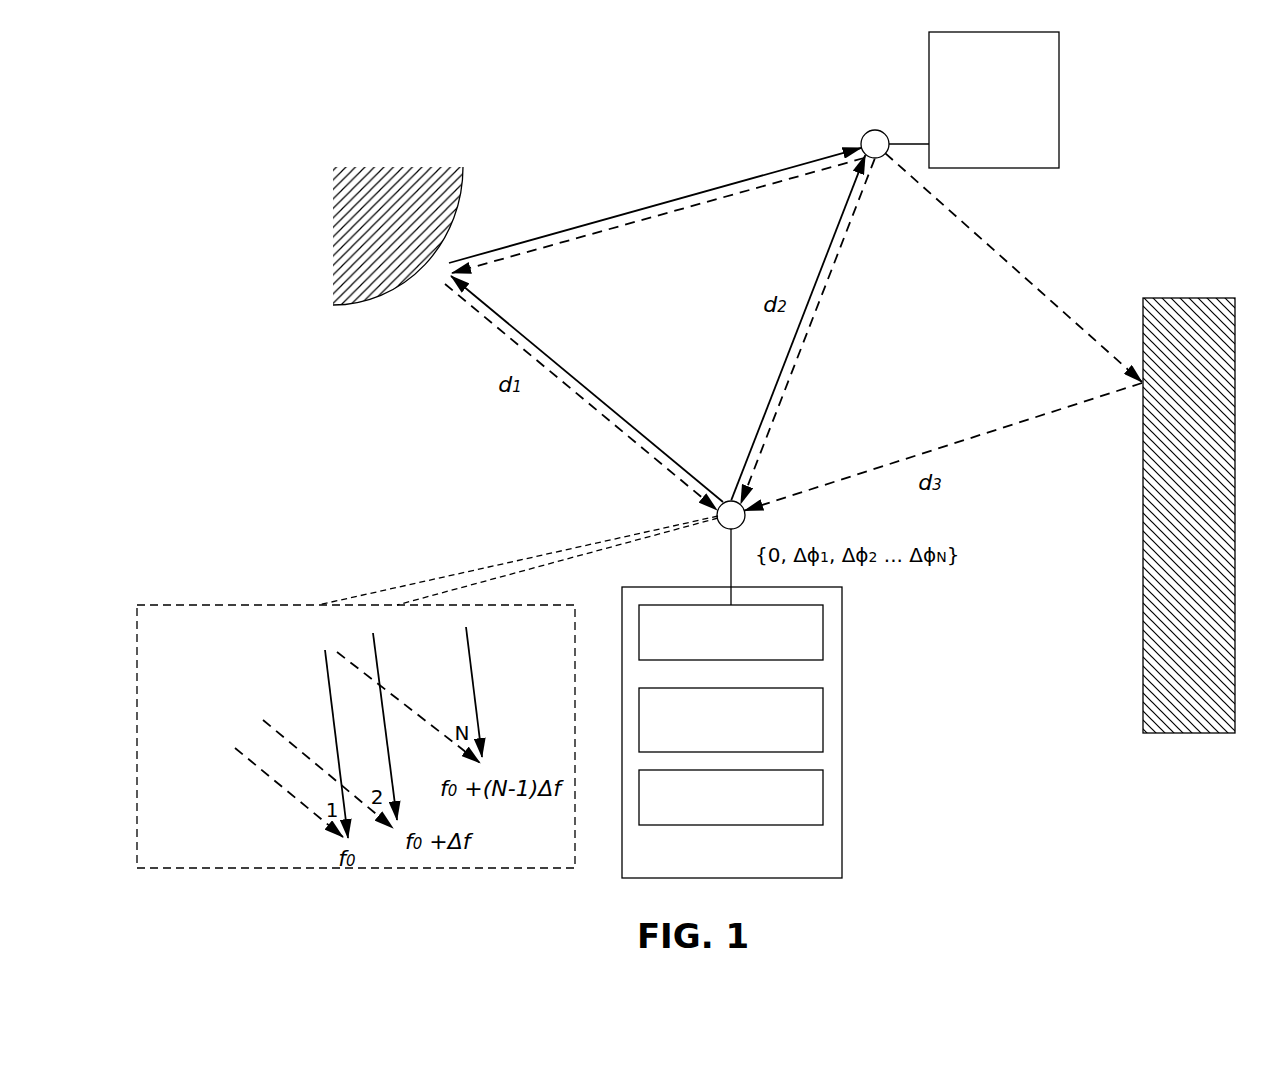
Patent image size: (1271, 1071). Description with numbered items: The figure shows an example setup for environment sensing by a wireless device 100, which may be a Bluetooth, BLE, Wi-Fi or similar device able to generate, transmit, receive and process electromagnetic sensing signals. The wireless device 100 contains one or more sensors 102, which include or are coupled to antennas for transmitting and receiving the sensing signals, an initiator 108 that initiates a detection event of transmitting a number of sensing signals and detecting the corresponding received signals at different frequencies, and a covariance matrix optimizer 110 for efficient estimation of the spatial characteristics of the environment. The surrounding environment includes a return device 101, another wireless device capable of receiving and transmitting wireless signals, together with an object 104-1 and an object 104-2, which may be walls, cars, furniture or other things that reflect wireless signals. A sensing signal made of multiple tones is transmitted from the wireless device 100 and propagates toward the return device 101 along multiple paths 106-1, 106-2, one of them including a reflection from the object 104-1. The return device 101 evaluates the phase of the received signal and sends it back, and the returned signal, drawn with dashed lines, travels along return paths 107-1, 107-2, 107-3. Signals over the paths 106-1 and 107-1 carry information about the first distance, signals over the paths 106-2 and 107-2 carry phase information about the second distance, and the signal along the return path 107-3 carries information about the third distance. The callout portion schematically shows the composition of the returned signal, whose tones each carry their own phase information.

The wireless device 100 is at (732, 689).
The return device 101 is at (960, 100).
The sensors 102 is at (731, 632).
The object 104-1 is at (348, 322).
The object 104-2 is at (1119, 708).
The path 106-1 is at (595, 383).
The path 106-2 is at (745, 420).
The return path 107-1 is at (605, 438).
The return path 107-2 is at (842, 287).
The return path 107-3 is at (1059, 427).
The initiator 108 is at (731, 797).
The covariance matrix optimizer 110 is at (731, 720).